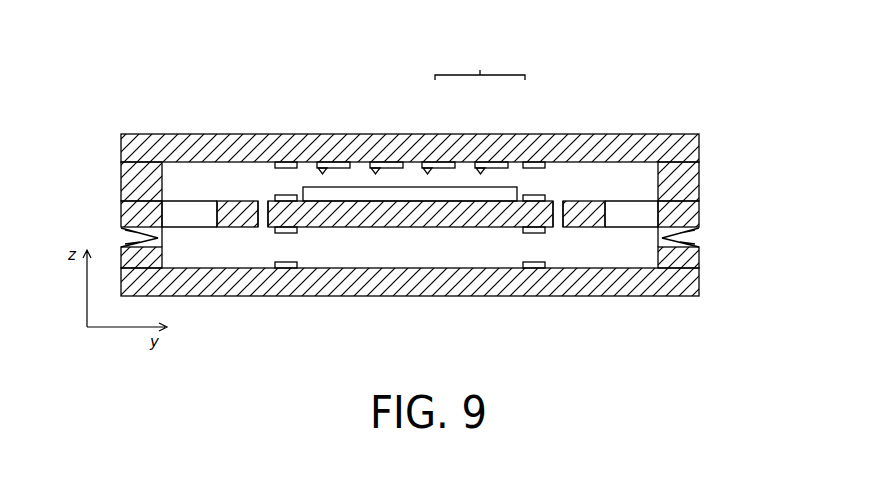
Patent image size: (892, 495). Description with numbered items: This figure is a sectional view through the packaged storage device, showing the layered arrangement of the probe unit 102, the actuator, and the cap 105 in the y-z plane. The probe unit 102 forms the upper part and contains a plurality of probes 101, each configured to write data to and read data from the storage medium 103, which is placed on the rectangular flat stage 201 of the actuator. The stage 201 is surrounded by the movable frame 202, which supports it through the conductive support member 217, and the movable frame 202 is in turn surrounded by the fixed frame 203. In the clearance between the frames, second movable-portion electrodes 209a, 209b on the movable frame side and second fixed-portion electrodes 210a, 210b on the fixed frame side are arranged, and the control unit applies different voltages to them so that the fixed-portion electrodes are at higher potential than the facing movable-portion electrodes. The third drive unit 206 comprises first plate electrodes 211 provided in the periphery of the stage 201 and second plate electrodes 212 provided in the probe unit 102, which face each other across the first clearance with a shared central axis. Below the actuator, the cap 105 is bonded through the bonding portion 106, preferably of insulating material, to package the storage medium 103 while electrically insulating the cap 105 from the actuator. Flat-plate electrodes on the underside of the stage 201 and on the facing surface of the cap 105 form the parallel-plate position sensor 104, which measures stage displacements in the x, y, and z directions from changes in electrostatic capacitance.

The probe 101 is at (383, 170).
The probe unit 102 is at (678, 187).
The storage medium 103 is at (403, 195).
The position sensor 104 is at (530, 232).
The cap 105 is at (700, 273).
The bonding portion 106 is at (700, 236).
The stage 201 is at (348, 215).
The movable frame 202 is at (238, 217).
The fixed frame 203 is at (130, 217).
The third drive unit 206 is at (480, 61).
The first plate electrode 211 is at (487, 160).
The second plate electrode 212 is at (533, 198).
The conductive support member 217 is at (262, 213).
The second movable-portion electrode 209a is at (618, 215).
The second movable-portion electrode 209b is at (202, 217).
The second fixed-portion electrode 210a is at (648, 215).
The second fixed-portion electrode 210b is at (175, 208).